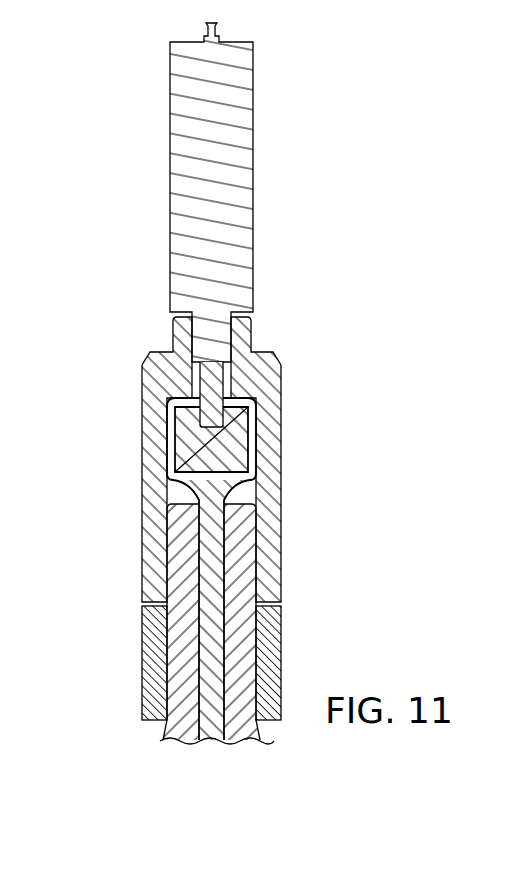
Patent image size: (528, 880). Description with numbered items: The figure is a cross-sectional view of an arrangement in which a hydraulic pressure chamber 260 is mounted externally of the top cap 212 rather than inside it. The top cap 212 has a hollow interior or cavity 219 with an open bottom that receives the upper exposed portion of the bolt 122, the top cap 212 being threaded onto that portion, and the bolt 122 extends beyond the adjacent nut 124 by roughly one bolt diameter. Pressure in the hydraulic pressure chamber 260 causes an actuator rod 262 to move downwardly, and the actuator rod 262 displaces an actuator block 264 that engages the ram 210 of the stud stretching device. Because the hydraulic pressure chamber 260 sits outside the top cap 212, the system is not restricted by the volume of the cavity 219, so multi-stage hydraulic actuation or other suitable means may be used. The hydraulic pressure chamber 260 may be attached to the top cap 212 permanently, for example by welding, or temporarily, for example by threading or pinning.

The hydraulic pressure chamber 260 is at (192, 105).
The top cap 212 is at (153, 353).
The actuator rod 262 is at (213, 378).
The cavity 219 is at (168, 434).
The actuator block 264 is at (220, 443).
The ram 210 is at (210, 484).
The bolt 122 is at (180, 531).
The nut 124 is at (146, 680).